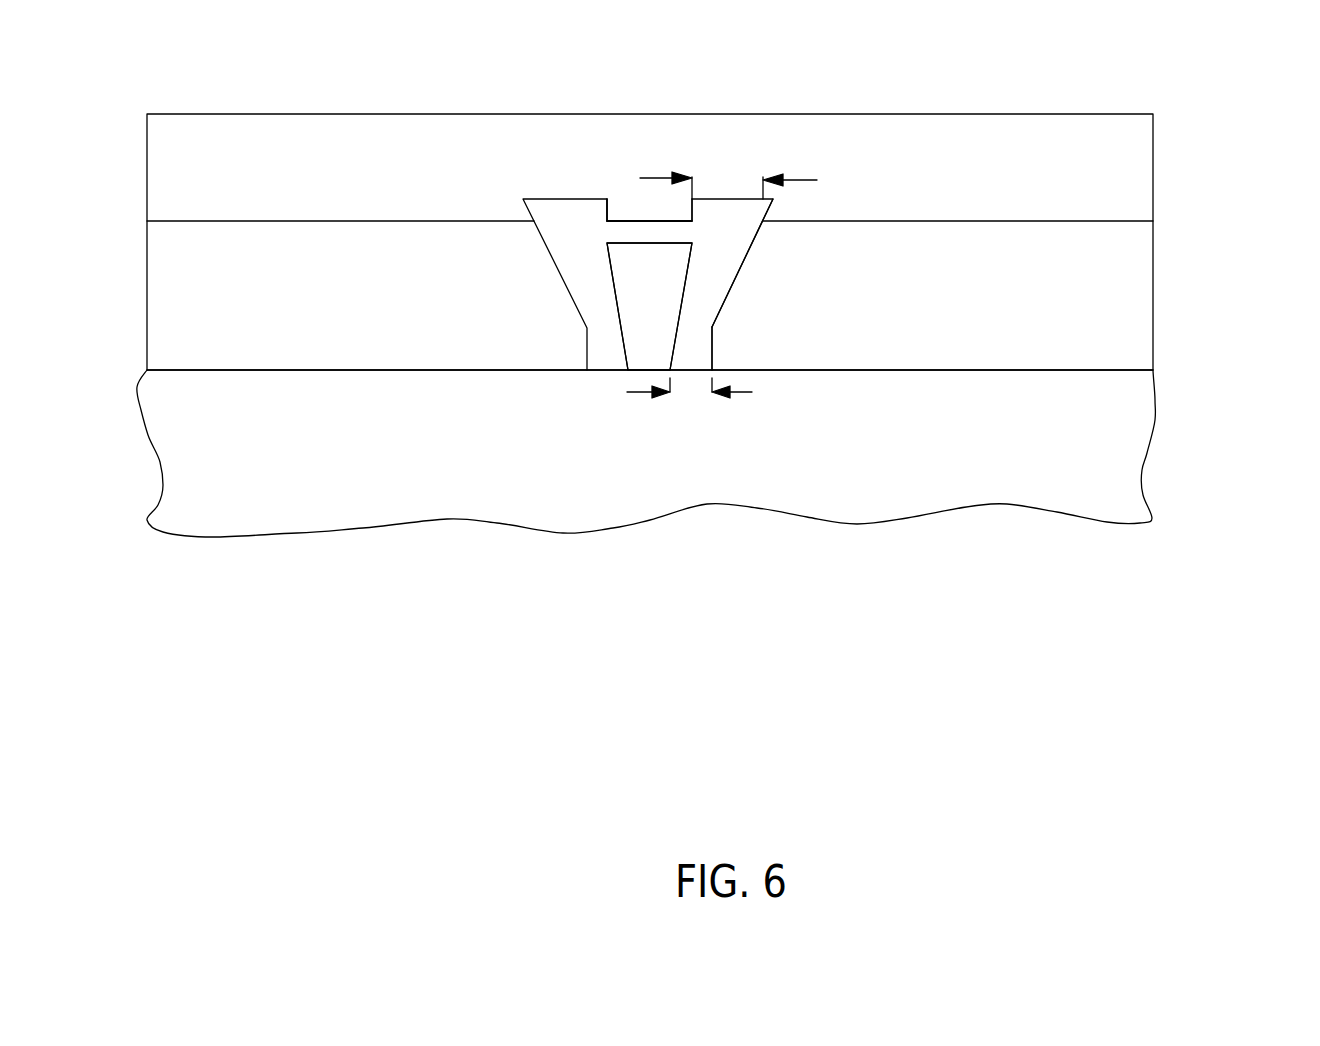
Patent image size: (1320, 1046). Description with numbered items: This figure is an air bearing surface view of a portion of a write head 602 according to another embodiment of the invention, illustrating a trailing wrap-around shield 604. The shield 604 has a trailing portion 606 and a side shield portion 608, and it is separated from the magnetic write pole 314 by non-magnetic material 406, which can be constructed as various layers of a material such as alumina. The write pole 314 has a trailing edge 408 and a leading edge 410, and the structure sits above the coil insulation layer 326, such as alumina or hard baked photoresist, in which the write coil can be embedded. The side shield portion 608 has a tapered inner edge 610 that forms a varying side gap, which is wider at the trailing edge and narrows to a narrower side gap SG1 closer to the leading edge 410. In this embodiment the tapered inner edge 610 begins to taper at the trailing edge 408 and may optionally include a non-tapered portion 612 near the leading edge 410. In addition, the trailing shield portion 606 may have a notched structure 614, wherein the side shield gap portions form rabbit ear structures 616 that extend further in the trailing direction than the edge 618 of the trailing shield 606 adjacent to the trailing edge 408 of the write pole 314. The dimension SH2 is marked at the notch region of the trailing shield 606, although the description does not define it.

The write head 602 is at (608, 112).
The notched structure 614 is at (682, 221).
The trailing wrap-around shield 604 is at (1166, 370).
The trailing portion 606 is at (315, 168).
The side shield portion 608 is at (300, 292).
The coil insulation layer 326 is at (632, 457).
The non-magnetic material 406 is at (573, 257).
The magnetic write pole 314 is at (679, 263).
The trailing edge 408 is at (650, 243).
The edge of the trailing shield 618 is at (632, 221).
The rabbit ear structures 616 is at (606, 212).
The tapered inner edge 610 is at (745, 265).
The non-tapered portion 612 is at (712, 350).
The leading edge 410 is at (646, 373).
The shoulder width SH2 is at (803, 179).
The narrower side gap SG1 is at (740, 393).